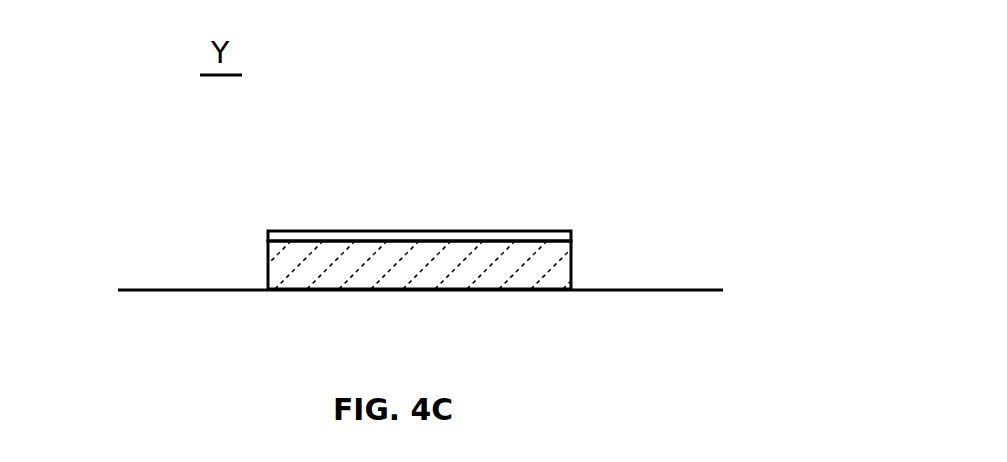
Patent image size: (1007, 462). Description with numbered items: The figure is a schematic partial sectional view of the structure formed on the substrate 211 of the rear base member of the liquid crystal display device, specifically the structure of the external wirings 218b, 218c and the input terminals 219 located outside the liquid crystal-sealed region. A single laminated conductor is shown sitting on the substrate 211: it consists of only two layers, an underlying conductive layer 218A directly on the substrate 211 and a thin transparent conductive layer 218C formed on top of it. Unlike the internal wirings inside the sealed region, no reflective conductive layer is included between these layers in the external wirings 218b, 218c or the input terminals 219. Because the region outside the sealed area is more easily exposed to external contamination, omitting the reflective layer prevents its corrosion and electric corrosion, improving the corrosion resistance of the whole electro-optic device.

The substrate 211 is at (163, 288).
The underlying conductive layer 218A is at (571, 272).
The transparent conductive layer 218C is at (571, 243).
The external wiring 218b is at (495, 192).
The external wiring 218c is at (568, 162).
The input terminal 219 is at (568, 162).